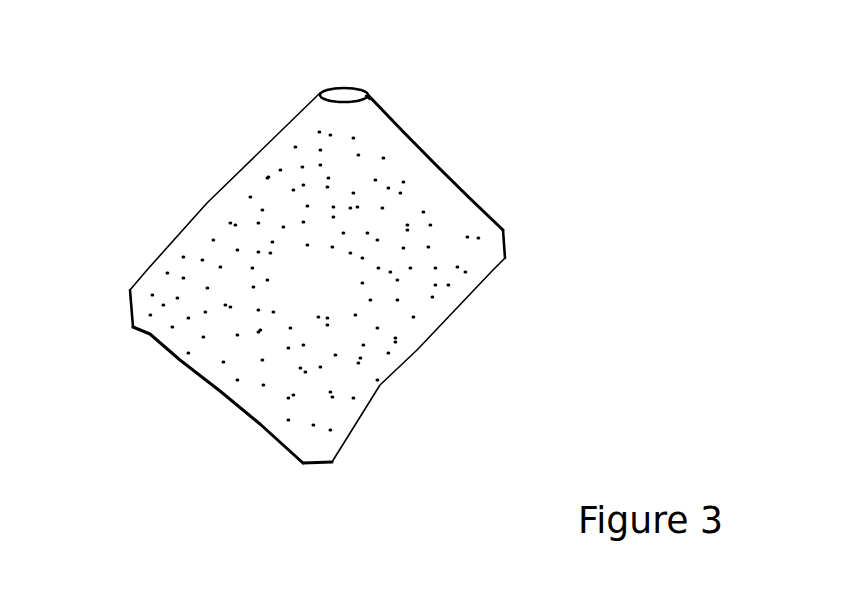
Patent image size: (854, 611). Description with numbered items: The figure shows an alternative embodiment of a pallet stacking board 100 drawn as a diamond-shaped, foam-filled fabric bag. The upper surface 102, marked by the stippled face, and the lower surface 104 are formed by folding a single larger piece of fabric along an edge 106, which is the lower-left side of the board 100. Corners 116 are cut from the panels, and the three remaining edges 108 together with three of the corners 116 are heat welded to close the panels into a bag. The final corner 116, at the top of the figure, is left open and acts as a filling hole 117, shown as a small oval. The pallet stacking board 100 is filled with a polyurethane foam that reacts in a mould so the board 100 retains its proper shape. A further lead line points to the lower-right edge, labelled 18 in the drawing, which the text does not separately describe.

The pallet stacking board 100 is at (535, 115).
The upper surface 102 is at (329, 286).
The lower surface 104 is at (457, 342).
The edge 106 is at (223, 393).
The edges 108 is at (207, 203).
The corners 116 is at (368, 92).
The filling hole 117 is at (343, 85).
The edge 18 is at (385, 388).